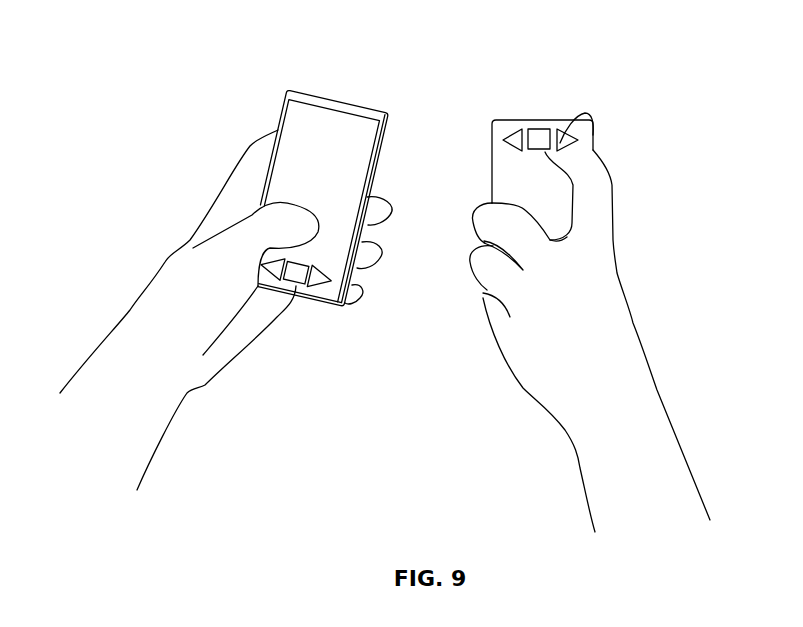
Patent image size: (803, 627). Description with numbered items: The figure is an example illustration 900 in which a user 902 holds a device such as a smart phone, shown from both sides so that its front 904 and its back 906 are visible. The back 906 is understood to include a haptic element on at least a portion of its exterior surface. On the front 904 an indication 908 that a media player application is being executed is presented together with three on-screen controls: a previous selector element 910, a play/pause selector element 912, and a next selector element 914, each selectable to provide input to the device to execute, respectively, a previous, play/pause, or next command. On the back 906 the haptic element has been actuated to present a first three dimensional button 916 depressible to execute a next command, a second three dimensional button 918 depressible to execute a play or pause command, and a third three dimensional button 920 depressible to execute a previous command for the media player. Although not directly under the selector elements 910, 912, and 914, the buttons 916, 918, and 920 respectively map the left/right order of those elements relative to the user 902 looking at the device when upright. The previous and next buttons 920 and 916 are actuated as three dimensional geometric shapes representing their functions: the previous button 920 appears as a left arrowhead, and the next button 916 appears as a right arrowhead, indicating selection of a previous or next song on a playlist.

The illustration 900 is at (660, 88).
The user 902 is at (130, 308).
The front 904 is at (355, 158).
The back 906 is at (593, 130).
The indication 908 is at (342, 170).
The previous selector element 910 is at (272, 280).
The play/pause selector element 912 is at (300, 295).
The next selector element 914 is at (330, 306).
The first three dimensional button 916 is at (513, 148).
The second three dimensional button 918 is at (538, 150).
The third three dimensional button 920 is at (574, 124).